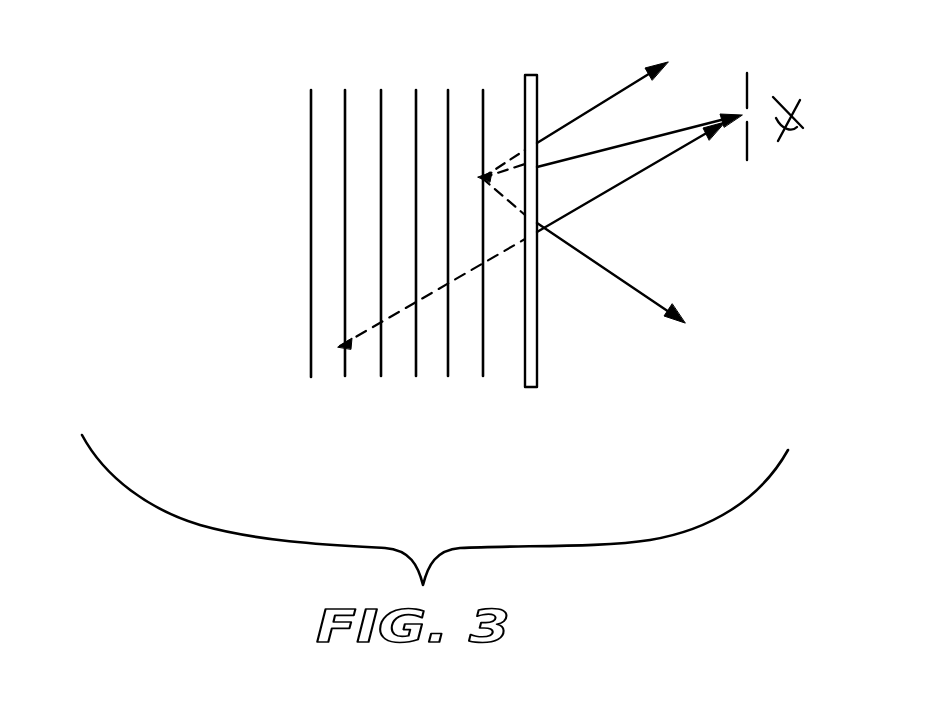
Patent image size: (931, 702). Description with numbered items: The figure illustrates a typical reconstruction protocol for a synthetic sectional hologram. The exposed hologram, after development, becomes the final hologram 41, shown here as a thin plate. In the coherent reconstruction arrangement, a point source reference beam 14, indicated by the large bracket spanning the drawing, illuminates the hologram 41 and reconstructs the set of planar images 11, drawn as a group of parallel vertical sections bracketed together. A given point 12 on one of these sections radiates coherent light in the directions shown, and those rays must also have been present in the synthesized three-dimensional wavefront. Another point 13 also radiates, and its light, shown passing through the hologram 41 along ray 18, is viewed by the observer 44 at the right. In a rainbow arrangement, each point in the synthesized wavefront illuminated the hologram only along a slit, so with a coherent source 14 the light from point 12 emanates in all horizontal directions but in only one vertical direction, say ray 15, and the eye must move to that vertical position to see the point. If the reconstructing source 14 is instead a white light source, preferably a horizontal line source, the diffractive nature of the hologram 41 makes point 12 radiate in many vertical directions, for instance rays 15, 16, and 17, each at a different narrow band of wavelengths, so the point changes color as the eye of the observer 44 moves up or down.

The set of planar images 11 is at (498, 403).
The point on a section 12 is at (478, 177).
The another point 13 is at (340, 346).
The point source reference beam 14 is at (146, 447).
The ray 15 is at (592, 108).
The ray 16 is at (624, 142).
The ray 17 is at (647, 298).
The light ray 18 is at (633, 181).
The final hologram 41 is at (531, 75).
The observer 44 is at (793, 101).